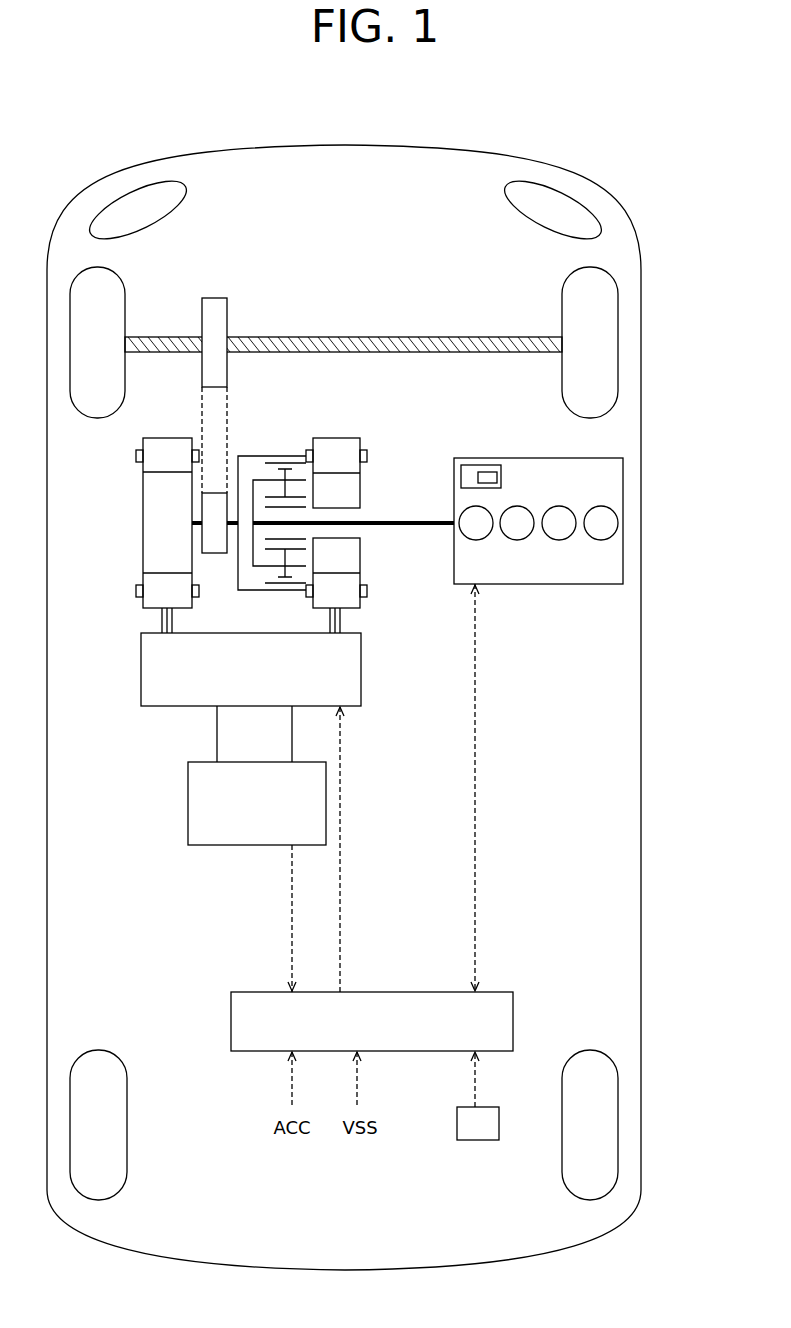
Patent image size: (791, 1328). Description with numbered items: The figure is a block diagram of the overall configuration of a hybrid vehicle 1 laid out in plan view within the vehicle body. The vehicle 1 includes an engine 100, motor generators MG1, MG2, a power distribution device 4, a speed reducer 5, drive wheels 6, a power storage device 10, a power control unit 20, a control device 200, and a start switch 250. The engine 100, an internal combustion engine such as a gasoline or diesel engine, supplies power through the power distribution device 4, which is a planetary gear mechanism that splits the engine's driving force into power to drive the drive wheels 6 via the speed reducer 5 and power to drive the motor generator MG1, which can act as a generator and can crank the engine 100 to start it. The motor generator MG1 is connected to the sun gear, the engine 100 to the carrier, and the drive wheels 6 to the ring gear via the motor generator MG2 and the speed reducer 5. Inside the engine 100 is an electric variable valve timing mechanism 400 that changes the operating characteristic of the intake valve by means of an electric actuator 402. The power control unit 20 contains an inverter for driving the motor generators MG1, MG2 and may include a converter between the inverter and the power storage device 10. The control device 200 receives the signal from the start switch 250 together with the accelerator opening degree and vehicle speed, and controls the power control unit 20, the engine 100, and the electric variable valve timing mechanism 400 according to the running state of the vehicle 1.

The hybrid vehicle 1 is at (97, 132).
The power distribution device 4 is at (270, 455).
The speed reducer 5 is at (213, 292).
The drive wheels 6 is at (618, 348).
The motor generator MG1 is at (335, 438).
The motor generator MG2 is at (175, 438).
The power storage device 10 is at (188, 800).
The power control unit 20 is at (361, 672).
The engine 100 is at (574, 490).
The control device 200 is at (231, 1021).
The start switch 250 is at (481, 1142).
The electric variable valve timing mechanism 400 is at (465, 464).
The electric actuator 402 is at (487, 470).